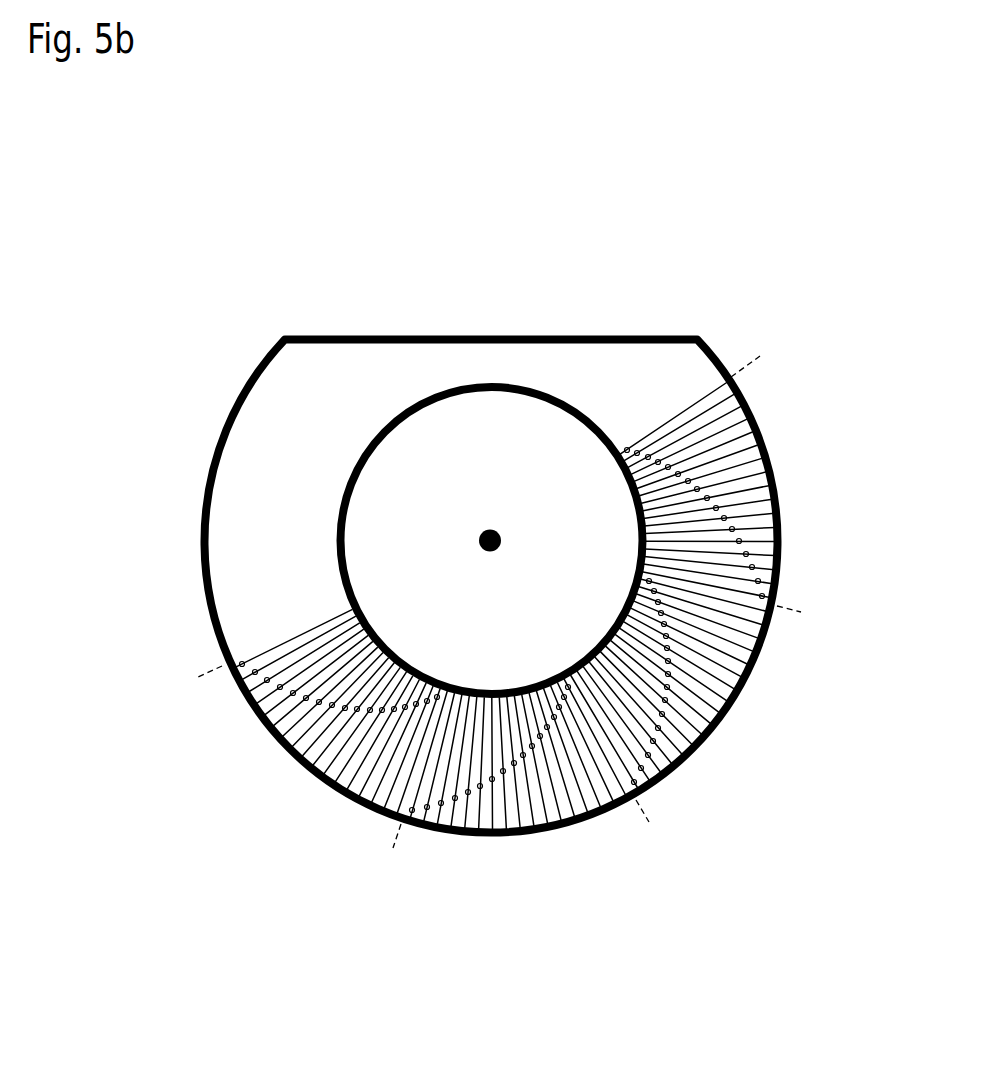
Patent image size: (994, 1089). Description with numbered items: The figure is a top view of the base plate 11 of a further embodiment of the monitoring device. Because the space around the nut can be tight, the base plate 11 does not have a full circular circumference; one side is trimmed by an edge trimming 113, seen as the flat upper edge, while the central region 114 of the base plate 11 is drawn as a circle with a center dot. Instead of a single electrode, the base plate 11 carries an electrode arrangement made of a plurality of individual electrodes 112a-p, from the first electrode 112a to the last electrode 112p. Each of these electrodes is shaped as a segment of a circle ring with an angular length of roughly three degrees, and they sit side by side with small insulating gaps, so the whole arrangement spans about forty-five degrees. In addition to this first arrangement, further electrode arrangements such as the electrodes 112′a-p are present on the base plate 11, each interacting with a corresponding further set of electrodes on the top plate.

The base plate 11 is at (797, 337).
The edge trimming 113 is at (641, 308).
The central disc / rotor 114 is at (445, 440).
The electrodes of the electrode arrangement 112a-p is at (387, 848).
The electrodes of the further electrode arrangement 112′a-p is at (644, 812).
The electrode 112a is at (257, 652).
The electrode 112p is at (398, 798).